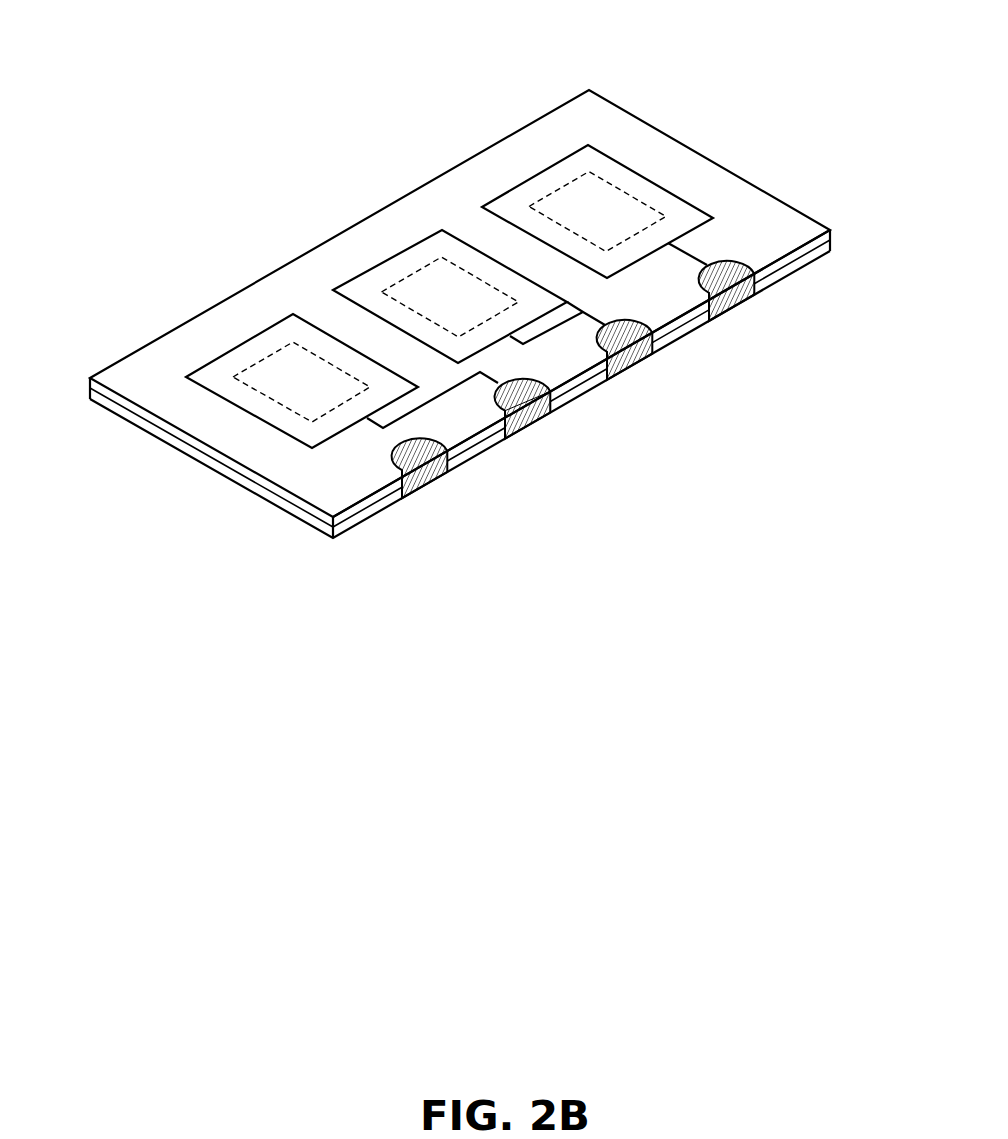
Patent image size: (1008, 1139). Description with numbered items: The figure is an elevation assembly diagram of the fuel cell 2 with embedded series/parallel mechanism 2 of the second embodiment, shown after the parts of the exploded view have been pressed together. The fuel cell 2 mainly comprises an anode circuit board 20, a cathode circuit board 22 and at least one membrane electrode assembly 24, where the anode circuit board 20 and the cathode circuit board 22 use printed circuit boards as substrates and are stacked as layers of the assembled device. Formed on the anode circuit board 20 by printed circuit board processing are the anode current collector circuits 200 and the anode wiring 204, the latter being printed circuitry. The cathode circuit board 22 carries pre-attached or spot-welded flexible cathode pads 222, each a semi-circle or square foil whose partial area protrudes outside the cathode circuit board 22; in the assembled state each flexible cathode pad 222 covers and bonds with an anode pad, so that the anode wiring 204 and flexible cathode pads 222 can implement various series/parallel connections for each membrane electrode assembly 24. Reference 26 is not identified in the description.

The fuel cell with embedded series/parallel mechanism 2 is at (187, 141).
The anode circuit board 20 is at (821, 242).
The cathode circuit board 22 is at (798, 265).
The membrane electrode assembly 24 is at (607, 205).
The side conductive portion 26 is at (540, 421).
The anode current collector circuit 200 is at (243, 357).
The anode wiring 204 is at (368, 419).
The flexible cathode pad 222 is at (403, 499).